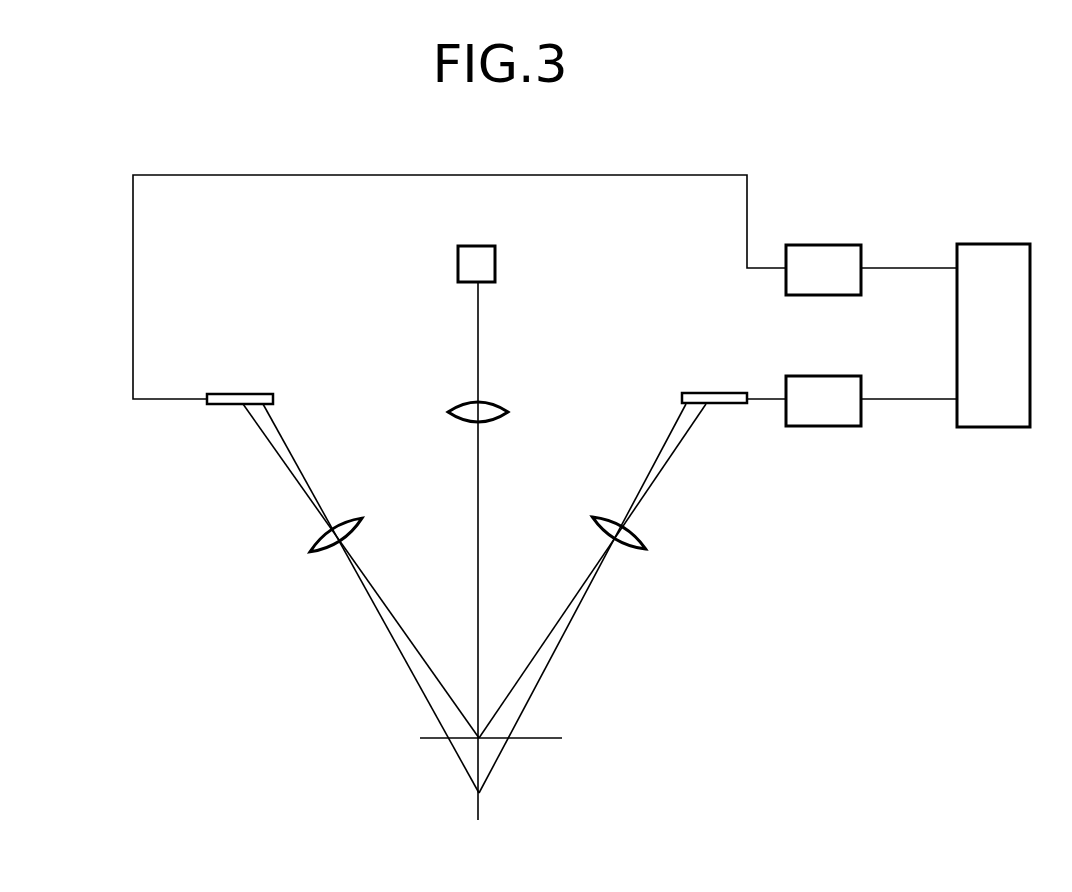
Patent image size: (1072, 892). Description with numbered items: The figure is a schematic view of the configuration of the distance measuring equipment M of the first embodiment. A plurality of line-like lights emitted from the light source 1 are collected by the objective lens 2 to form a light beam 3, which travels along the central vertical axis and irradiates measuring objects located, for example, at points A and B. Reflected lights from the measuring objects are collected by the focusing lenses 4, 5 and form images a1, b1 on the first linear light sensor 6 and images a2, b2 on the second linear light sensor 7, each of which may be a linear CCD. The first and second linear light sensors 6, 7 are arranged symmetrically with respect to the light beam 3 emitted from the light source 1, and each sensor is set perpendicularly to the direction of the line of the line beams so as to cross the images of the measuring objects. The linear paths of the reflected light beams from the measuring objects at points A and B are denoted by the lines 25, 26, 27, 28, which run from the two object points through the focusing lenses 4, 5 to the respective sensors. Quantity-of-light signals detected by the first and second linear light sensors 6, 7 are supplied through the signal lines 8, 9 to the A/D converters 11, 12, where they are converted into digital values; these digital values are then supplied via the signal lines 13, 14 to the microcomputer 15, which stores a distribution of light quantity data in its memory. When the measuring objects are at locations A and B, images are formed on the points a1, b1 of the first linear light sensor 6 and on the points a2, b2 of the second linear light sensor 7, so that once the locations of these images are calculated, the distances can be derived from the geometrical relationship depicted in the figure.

The light source 1 is at (496, 268).
The objective lens 2 is at (508, 412).
The light beam 3 is at (480, 530).
The focusing lens 4 is at (632, 551).
The focusing lens 5 is at (318, 553).
The first linear light sensor 6 is at (714, 393).
The second linear light sensor 7 is at (243, 394).
The signal line 8 is at (762, 401).
The signal line 9 is at (762, 270).
The A/D converter 11 is at (823, 428).
The A/D converter 12 is at (823, 297).
The signal line 13 is at (895, 401).
The signal line 14 is at (890, 270).
The microcomputer 15 is at (984, 243).
The linear path of reflected light beam 25 is at (550, 637).
The linear path of reflected light beam 26 is at (408, 640).
The linear path of reflected light beam 27 is at (552, 670).
The linear path of reflected light beam 28 is at (412, 670).
The image point a1 is at (722, 406).
The image point a2 is at (235, 406).
The image point b1 is at (682, 401).
The image point b2 is at (273, 401).
The measuring object point A is at (492, 691).
The measuring object point B is at (492, 809).
The measuring equipment M is at (775, 560).